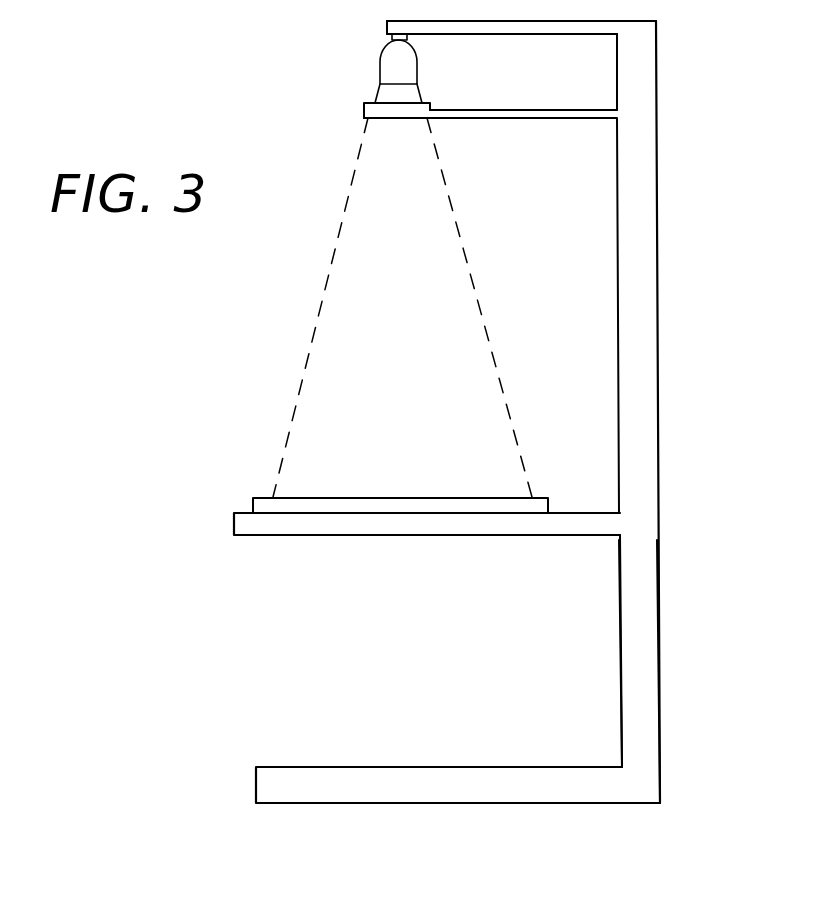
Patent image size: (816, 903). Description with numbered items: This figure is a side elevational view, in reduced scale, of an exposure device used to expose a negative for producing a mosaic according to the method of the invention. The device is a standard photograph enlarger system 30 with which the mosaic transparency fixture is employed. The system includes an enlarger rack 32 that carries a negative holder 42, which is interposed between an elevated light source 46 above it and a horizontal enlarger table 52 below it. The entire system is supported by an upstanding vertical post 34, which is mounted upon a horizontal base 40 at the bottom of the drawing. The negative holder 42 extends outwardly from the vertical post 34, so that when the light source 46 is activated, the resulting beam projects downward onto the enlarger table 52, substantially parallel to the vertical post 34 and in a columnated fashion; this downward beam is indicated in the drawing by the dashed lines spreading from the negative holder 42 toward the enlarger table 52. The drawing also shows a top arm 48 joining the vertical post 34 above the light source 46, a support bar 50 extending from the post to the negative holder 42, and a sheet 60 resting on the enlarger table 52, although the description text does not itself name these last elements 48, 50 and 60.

The photograph enlarger system 30 is at (225, 459).
The enlarger rack 32 is at (656, 253).
The vertical post 34 is at (658, 672).
The horizontal base 40 is at (281, 767).
The negative holder 42 is at (364, 110).
The light source 46 is at (380, 56).
The top arm 48 is at (656, 108).
The light source support bar 50 is at (541, 119).
The enlarger table 52 is at (243, 536).
The sheet sample 60 is at (254, 491).